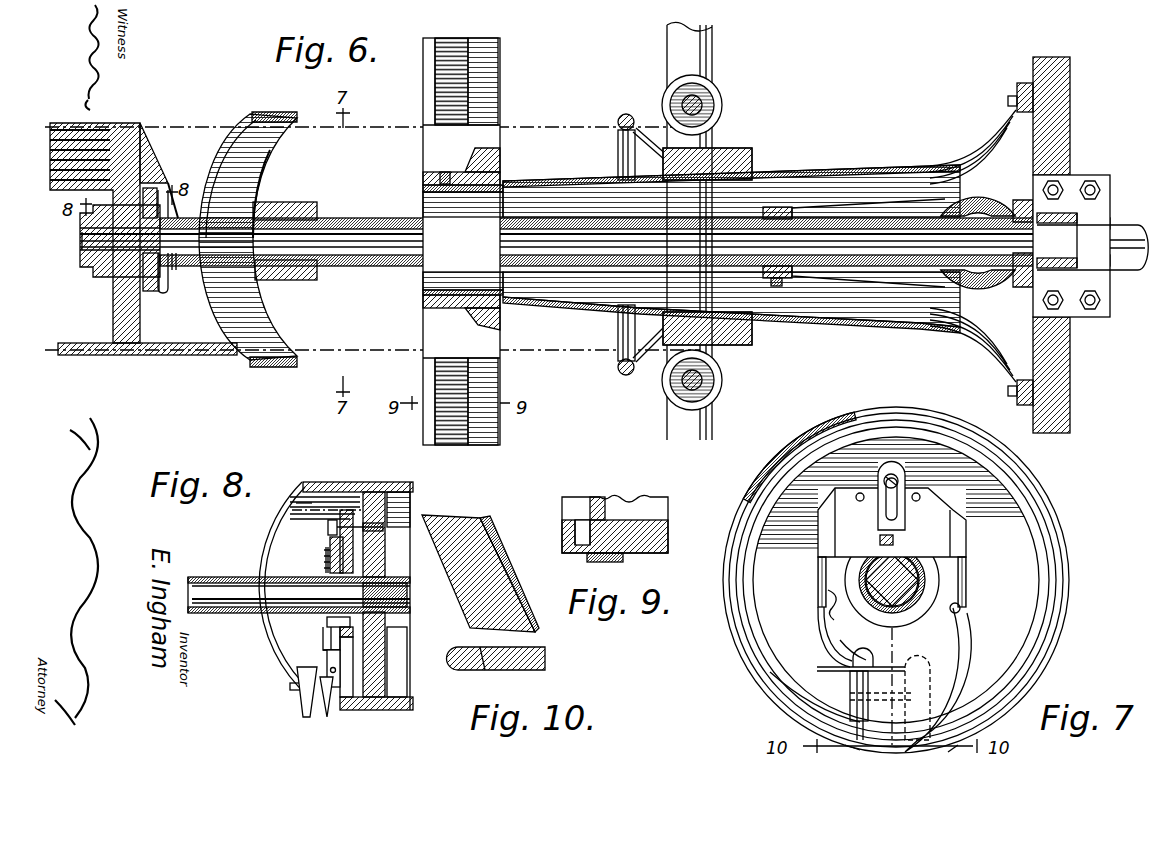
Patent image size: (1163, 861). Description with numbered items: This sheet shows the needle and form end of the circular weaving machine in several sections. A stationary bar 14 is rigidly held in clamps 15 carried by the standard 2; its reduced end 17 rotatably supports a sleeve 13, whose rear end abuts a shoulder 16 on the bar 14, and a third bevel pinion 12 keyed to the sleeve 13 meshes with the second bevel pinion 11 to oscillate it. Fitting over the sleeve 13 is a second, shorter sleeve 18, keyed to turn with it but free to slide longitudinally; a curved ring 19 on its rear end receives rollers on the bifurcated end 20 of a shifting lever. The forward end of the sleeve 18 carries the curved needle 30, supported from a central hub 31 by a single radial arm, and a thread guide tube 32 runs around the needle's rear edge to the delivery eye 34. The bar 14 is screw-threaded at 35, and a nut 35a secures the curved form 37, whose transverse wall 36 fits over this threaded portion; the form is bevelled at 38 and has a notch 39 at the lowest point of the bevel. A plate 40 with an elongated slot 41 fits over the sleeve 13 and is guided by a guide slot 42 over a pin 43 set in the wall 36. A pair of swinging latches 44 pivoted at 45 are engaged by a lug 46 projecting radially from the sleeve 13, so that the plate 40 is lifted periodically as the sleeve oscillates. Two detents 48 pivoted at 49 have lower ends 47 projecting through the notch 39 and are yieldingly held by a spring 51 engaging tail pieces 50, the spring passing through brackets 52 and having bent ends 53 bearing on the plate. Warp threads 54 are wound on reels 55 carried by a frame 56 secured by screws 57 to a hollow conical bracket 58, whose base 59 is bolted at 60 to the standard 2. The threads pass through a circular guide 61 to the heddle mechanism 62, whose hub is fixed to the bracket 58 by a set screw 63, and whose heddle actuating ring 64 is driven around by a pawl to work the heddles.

In FIG. 6, the standard 2 is at (1072, 354).
In FIG. 6, the second bevel pinion 11 is at (950, 226).
In FIG. 6, the third bevel pinion 12 is at (1025, 290).
In FIG. 6, the sleeve 13 is at (358, 225).
In FIG. 7, the sleeve 13 is at (906, 580).
In FIG. 8, the sleeve 13 is at (245, 614).
In FIG. 6, the bar 14 is at (1130, 272).
In FIG. 6, the clamp 15 is at (1100, 230).
In FIG. 6, the shoulder 16 is at (1070, 232).
In FIG. 6, the reduced end 17 is at (356, 246).
In FIG. 7, the reduced end 17 is at (900, 590).
In FIG. 8, the reduced end 17 is at (229, 577).
In FIG. 6, the second sleeve 18 is at (690, 267).
In FIG. 7, the second sleeve 18 is at (916, 574).
In FIG. 6, the curved ring 19 is at (766, 279).
In FIG. 6, the bifurcated end 20 is at (784, 286).
In FIG. 6, the needle 30 is at (270, 104).
In FIG. 7, the needle 30 is at (1035, 498).
In FIG. 6, the central hub 31 is at (282, 284).
In FIG. 7, the central hub 31 is at (906, 562).
In FIG. 10, the central hub 31 is at (457, 578).
In FIG. 6, the thread guide tube 32 is at (256, 186).
In FIG. 7, the thread guide tube 32 is at (830, 414).
In FIG. 10, the thread guide tube 32 is at (500, 560).
In FIG. 7, the delivery eye 34 is at (846, 748).
In FIG. 10, the delivery eye 34 is at (496, 660).
In FIG. 6, the screw-threaded end 35 is at (100, 255).
In FIG. 8, the screw-threaded end 35 is at (398, 590).
In FIG. 10, the screw-threaded end 35 is at (458, 670).
In FIG. 6, the nut 35a is at (82, 234).
In FIG. 6, the transverse wall 36 is at (113, 316).
In FIG. 7, the transverse wall 36 is at (818, 580).
In FIG. 8, the transverse wall 36 is at (400, 660).
In FIG. 6, the form 37 is at (156, 356).
In FIG. 7, the form 37 is at (772, 672).
In FIG. 8, the form 37 is at (355, 482).
In FIG. 6, the bevelled edge 38 is at (156, 168).
In FIG. 7, the notch 39 is at (957, 749).
In FIG. 8, the notch 39 is at (306, 720).
In FIG. 6, the plate 40 is at (151, 292).
In FIG. 8, the plate 40 is at (330, 552).
In FIG. 8, the elongated slot 41 is at (327, 622).
In FIG. 7, the guide slot 42 is at (900, 503).
In FIG. 8, the guide slot 42 is at (328, 528).
In FIG. 7, the pin 43 is at (890, 466).
In FIG. 8, the pin 43 is at (298, 504).
In FIG. 7, the swinging latch 44 is at (942, 532).
In FIG. 7, the pivot 45 is at (922, 498).
In FIG. 7, the lug 46 is at (882, 537).
In FIG. 8, the lug 46 is at (326, 560).
In FIG. 7, the lower end of detent 47 is at (935, 702).
In FIG. 8, the lower end of detent 47 is at (330, 718).
In FIG. 6, the detent 48 is at (178, 272).
In FIG. 7, the detent 48 is at (850, 704).
In FIG. 8, the detent 48 is at (300, 692).
In FIG. 7, the detent pivot 49 is at (848, 671).
In FIG. 8, the detent pivot 49 is at (290, 688).
In FIG. 7, the tail piece 50 is at (870, 652).
In FIG. 8, the tail piece 50 is at (323, 640).
In FIG. 6, the spring 51 is at (166, 294).
In FIG. 7, the spring 51 is at (866, 658).
In FIG. 8, the spring 51 is at (323, 652).
In FIG. 7, the bracket 52 is at (816, 604).
In FIG. 7, the bent end 53 is at (841, 608).
In FIG. 6, the warp thread 54 is at (553, 127).
In FIG. 6, the reel 55 is at (708, 107).
In FIG. 6, the frame 56 is at (703, 59).
In FIG. 6, the screw 57 is at (735, 148).
In FIG. 6, the hollow bracket 58 is at (790, 170).
In FIG. 6, the base of bracket 59 is at (1020, 84).
In FIG. 6, the bolt 60 is at (1008, 102).
In FIG. 6, the circular guide 61 is at (624, 114).
In FIG. 6, the heddle mechanism 62 is at (490, 72).
In FIG. 9, the heddle mechanism 62 is at (660, 542).
In FIG. 6, the set screw 63 is at (446, 172).
In FIG. 9, the set screw 63 is at (597, 508).
In FIG. 6, the heddle actuating ring 64 is at (452, 38).
In FIG. 9, the heddle actuating ring 64 is at (590, 558).